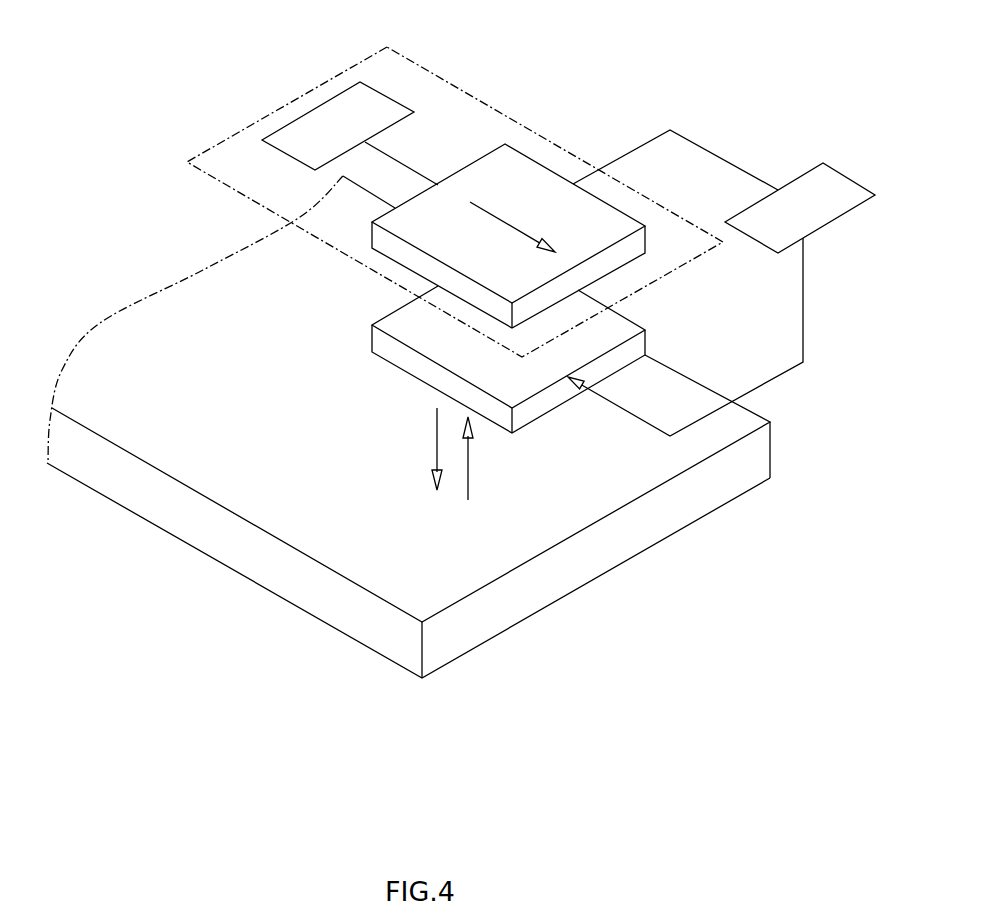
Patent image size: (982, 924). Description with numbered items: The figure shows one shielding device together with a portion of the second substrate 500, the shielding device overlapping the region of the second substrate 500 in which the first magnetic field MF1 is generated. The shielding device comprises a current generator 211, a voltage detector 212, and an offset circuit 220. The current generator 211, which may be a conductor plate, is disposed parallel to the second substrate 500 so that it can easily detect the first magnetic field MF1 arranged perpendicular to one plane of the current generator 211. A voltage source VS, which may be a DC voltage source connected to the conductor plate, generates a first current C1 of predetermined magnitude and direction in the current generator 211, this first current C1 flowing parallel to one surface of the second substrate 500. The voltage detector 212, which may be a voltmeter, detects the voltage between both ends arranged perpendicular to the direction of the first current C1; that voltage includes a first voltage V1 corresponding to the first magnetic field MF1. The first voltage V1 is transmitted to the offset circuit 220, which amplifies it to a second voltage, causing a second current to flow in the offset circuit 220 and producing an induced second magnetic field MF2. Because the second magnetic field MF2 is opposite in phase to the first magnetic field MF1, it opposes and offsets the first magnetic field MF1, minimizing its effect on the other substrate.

The current generator 211 is at (415, 65).
The voltage detector 212 is at (808, 170).
The offset circuit 220 is at (372, 336).
The second substrate 500 is at (650, 548).
The first current C1 is at (505, 217).
The first voltage V1 is at (702, 337).
The first magnetic field MF1 is at (470, 463).
The second magnetic field MF2 is at (437, 437).
The voltage source VS is at (338, 126).